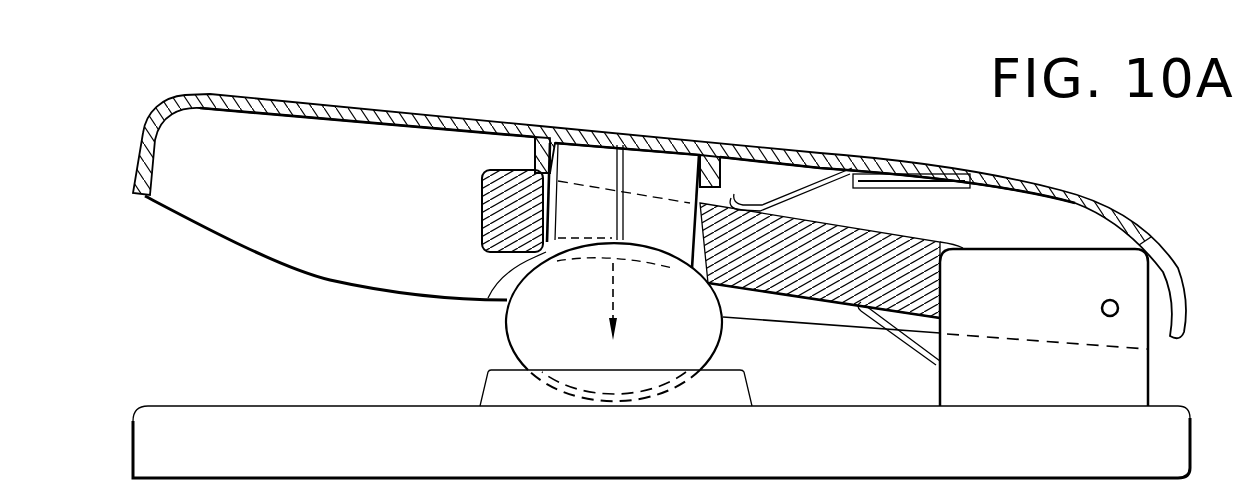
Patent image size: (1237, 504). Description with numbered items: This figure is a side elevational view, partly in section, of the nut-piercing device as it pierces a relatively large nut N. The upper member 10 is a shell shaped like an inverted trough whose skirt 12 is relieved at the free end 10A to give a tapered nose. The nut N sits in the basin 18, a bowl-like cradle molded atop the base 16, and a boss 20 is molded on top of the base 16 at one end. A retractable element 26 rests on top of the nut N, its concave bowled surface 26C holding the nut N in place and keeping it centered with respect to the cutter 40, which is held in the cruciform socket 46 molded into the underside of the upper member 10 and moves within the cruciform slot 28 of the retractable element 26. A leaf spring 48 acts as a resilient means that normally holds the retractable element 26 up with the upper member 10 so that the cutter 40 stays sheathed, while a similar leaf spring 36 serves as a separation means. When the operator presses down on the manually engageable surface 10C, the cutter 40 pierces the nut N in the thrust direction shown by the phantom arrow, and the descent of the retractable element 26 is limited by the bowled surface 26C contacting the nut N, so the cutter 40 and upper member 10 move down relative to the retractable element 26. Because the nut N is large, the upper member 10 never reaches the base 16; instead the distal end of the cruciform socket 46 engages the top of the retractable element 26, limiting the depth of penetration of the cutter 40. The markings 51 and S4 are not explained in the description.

The free end 10A is at (157, 110).
The upper member 10 is at (445, 108).
The manually engageable surface 10C is at (330, 103).
The skirt 12 is at (210, 213).
The base 16 is at (467, 479).
The basin 18 is at (483, 378).
The boss 20 is at (1117, 372).
The retractable element 26 is at (852, 303).
The bowled surface 26C is at (557, 233).
The cruciform slot 28 is at (490, 300).
The leaf spring 36 is at (926, 363).
The cutter 40 is at (603, 167).
The cruciform socket 46 is at (532, 150).
The leaf spring 48 is at (792, 192).
The gap / opening direction arrow 51 is at (518, 159).
The stroke direction S4 is at (610, 300).
The nut N is at (710, 345).